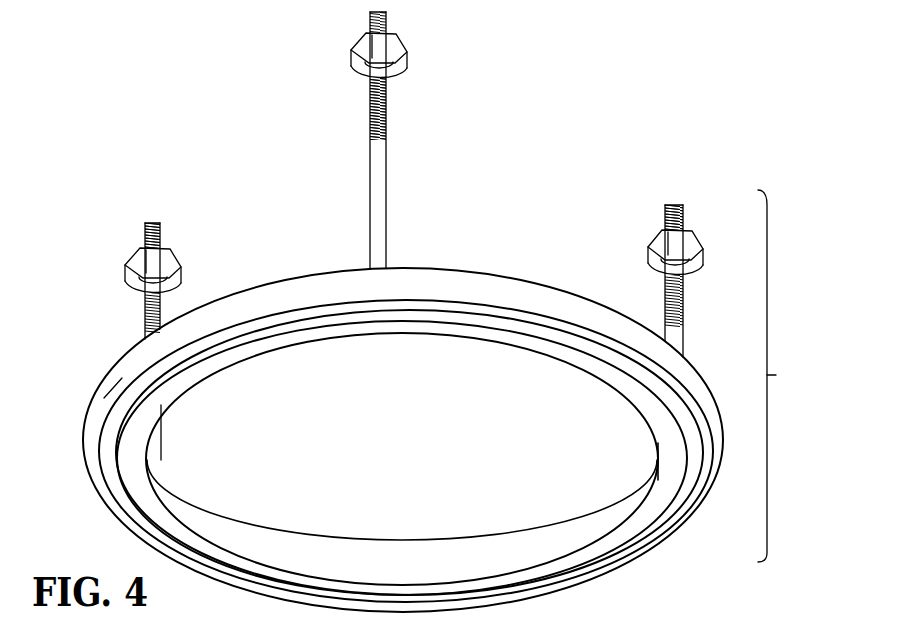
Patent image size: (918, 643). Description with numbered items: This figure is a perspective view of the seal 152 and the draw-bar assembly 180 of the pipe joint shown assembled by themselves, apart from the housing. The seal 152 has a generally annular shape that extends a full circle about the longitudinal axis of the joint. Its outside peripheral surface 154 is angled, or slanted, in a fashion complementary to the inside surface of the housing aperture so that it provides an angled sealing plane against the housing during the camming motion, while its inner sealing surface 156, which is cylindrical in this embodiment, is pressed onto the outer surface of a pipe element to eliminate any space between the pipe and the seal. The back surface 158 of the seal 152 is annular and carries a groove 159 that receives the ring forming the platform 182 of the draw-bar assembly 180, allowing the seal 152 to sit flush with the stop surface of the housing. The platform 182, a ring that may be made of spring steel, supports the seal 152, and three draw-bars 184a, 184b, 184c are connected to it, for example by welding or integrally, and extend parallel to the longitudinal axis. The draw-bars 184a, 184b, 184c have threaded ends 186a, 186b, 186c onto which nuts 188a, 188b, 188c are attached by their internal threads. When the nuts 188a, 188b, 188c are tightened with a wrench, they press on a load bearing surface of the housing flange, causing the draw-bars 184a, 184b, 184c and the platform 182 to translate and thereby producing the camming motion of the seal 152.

The seal 152 is at (535, 292).
The outside peripheral surface 154 is at (292, 290).
The inner sealing surface 156 is at (415, 574).
The back surface 158 is at (190, 390).
The groove 159 is at (110, 422).
The draw-bar assembly 180 is at (782, 376).
The platform 182 is at (362, 328).
The draw-bar 184a is at (389, 205).
The draw-bar 184b is at (688, 323).
The draw-bar 184c is at (165, 437).
The threaded end 186a is at (387, 95).
The threaded end 186b is at (667, 208).
The threaded end 186c is at (162, 222).
The nut 188a is at (408, 38).
The nut 188b is at (694, 230).
The nut 188c is at (183, 258).